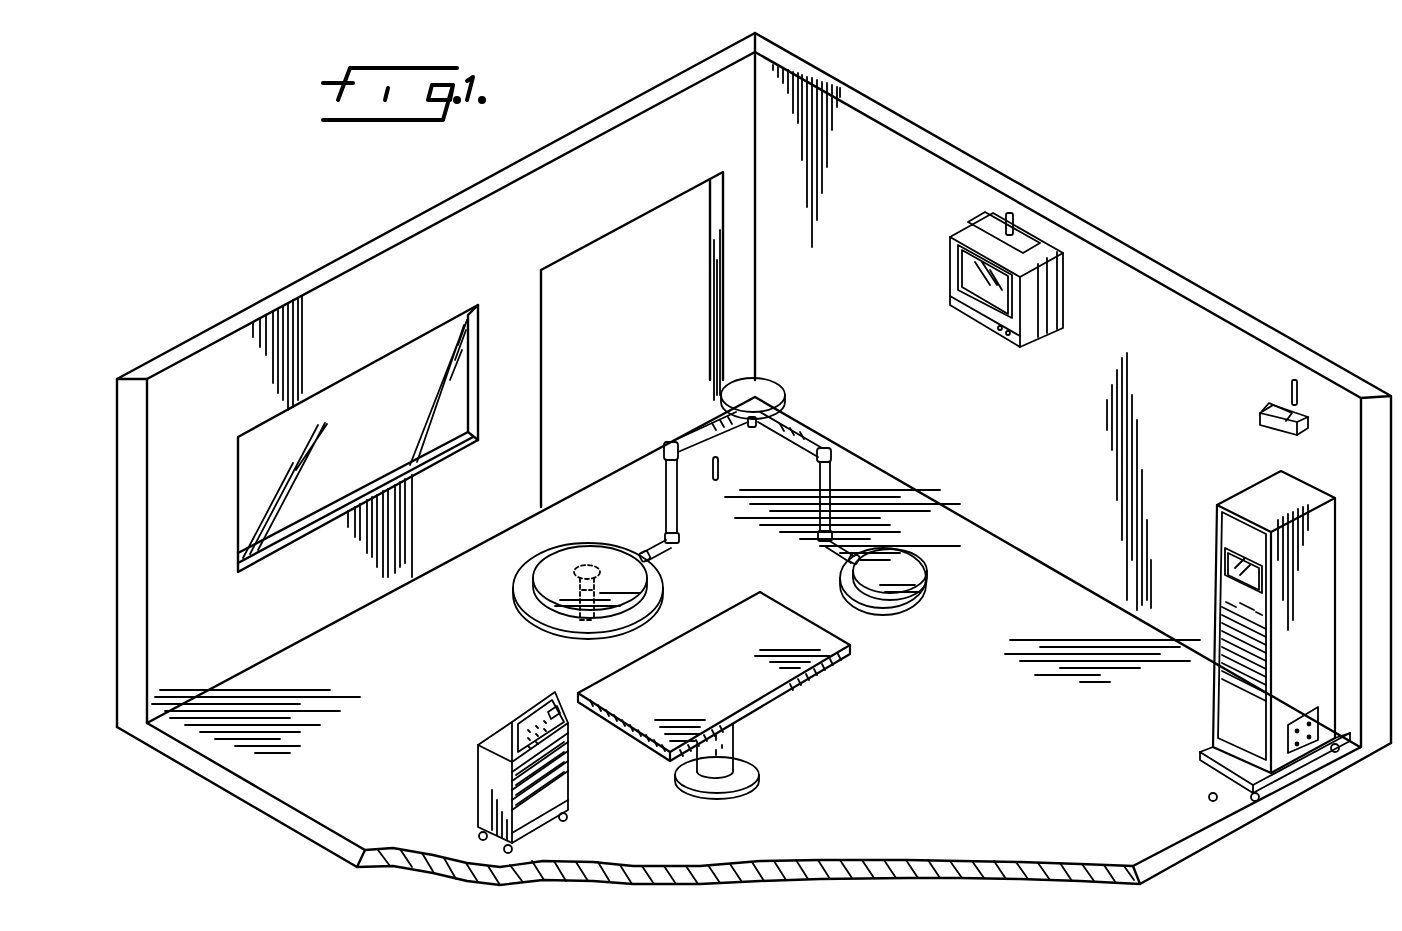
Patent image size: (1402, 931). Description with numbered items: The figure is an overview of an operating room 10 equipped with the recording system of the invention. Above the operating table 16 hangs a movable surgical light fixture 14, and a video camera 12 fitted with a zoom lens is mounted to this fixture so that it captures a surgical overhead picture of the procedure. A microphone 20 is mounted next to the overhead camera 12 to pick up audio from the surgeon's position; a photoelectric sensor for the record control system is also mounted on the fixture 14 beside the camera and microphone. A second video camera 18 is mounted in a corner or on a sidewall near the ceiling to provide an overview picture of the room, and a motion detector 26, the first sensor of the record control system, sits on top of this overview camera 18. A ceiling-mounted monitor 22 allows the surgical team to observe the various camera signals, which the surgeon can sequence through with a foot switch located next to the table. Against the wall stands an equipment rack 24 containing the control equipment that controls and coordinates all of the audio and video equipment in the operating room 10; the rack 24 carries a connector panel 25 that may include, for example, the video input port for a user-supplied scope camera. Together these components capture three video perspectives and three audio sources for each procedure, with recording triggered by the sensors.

The operating room 10 is at (917, 111).
The video camera 12 is at (595, 565).
The movable surgical light fixture 14 is at (667, 475).
The operating table 16 is at (768, 600).
The second video camera 18 is at (1273, 427).
The microphone 20 is at (620, 605).
The ceiling-mounted monitor 22 is at (1031, 340).
The equipment rack 24 is at (1243, 498).
The connector panel 25 is at (1305, 743).
The motion detector 26 is at (1272, 403).